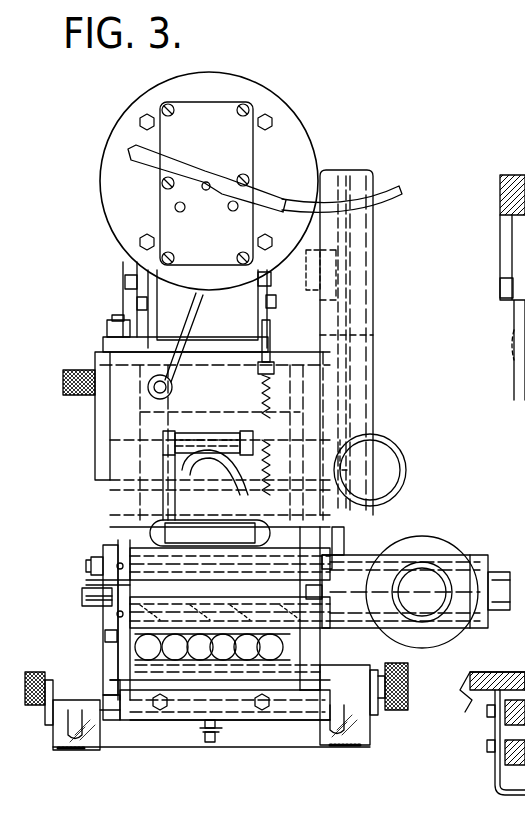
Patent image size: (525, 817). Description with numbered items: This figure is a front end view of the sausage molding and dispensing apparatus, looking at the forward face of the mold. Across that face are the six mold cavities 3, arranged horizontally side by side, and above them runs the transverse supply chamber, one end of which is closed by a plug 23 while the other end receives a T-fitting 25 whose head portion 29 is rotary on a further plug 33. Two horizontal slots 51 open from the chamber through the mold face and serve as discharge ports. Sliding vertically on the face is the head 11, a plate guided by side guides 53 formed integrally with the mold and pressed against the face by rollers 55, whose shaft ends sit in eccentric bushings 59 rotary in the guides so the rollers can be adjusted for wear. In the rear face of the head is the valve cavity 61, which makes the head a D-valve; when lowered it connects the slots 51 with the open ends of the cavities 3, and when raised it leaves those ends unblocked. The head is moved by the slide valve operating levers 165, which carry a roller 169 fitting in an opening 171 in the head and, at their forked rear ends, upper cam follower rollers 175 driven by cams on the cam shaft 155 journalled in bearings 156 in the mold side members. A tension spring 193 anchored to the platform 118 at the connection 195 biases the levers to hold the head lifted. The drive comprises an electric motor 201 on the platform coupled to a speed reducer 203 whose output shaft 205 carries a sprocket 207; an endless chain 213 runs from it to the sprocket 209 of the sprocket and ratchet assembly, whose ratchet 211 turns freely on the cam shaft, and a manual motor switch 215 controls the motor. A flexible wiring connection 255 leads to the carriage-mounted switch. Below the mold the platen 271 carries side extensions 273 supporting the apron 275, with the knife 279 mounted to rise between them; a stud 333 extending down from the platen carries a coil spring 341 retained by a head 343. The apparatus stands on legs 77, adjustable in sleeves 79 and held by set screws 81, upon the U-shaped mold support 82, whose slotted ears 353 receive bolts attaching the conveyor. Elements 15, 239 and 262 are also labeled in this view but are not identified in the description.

The cavities 3 is at (166, 663).
The head 11 is at (118, 552).
The roller shaft 15 is at (212, 661).
The plug 23 is at (108, 581).
The T-fitting 25 is at (470, 636).
The head portion 29 is at (386, 628).
The plug 33 is at (488, 560).
The slots 51 is at (230, 612).
The side guides 53 is at (100, 594).
The rollers 55 is at (162, 588).
The bushings 59 is at (95, 554).
The valve cavity 61 is at (105, 637).
The legs 77 is at (63, 751).
The sleeves 79 is at (52, 718).
The set screws 81 is at (38, 672).
The U-shaped mold support 82 is at (173, 746).
The platform 118 is at (100, 350).
The cam shaft 155 is at (385, 492).
The bearings 156 is at (524, 342).
The slide valve operating levers 165 is at (166, 441).
The roller 169 is at (206, 538).
The opening 171 is at (150, 530).
The upper cam follower rollers 175 is at (206, 432).
The tension spring 193 is at (262, 393).
The spring connection 195 is at (258, 370).
The electric motor 201 is at (290, 118).
The speed reducer 203 is at (128, 288).
The output shaft 205 is at (306, 260).
The sprocket 207 is at (373, 227).
The sprocket 209 is at (345, 446).
The ratchet 211 is at (344, 552).
The endless chain 213 is at (358, 327).
The manual motor switch 215 is at (158, 214).
The guide 239 is at (516, 790).
The flexible wiring connection 255 is at (400, 464).
The base bar 262 is at (225, 705).
The platen 271 is at (256, 678).
The side extensions 273 is at (125, 678).
The apron 275 is at (116, 711).
The knife 279 is at (236, 714).
The stud 333 is at (212, 720).
The coil spring 341 is at (200, 728).
The head 343 is at (211, 742).
The slotted ears 353 is at (66, 732).